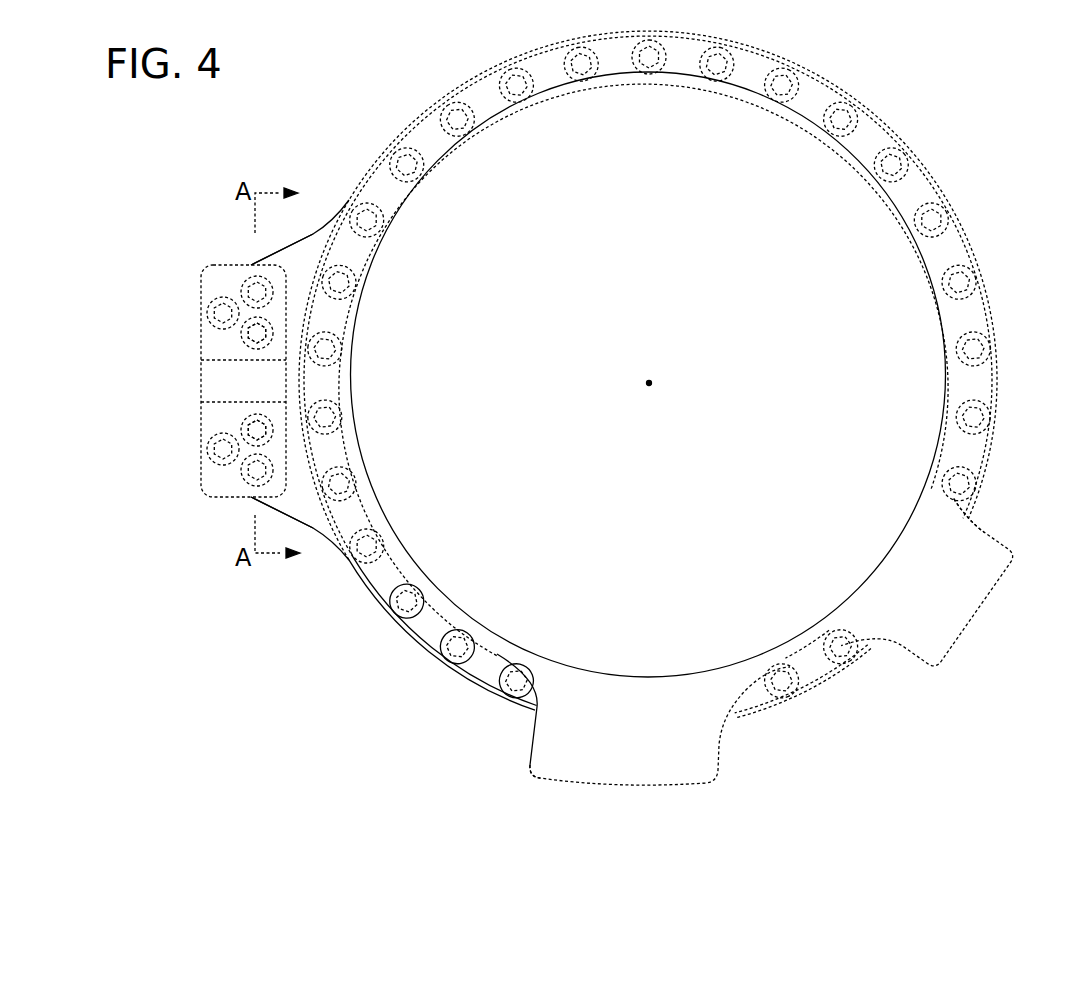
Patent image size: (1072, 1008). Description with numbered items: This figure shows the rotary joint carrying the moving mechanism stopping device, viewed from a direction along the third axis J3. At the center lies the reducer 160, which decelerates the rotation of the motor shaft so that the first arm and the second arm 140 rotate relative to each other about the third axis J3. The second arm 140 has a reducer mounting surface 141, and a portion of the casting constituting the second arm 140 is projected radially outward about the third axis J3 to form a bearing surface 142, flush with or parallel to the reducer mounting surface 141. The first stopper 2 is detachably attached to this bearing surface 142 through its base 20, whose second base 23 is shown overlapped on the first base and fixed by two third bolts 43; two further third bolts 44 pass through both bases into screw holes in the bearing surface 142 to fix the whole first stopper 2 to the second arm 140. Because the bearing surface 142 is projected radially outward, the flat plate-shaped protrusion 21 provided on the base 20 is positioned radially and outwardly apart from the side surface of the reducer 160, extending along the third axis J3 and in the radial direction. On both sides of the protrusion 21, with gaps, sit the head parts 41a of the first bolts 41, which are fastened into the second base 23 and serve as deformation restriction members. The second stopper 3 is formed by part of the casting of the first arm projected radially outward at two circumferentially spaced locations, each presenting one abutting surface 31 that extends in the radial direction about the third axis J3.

The first stopper 2 is at (149, 262).
The base 20 is at (188, 433).
The protrusion 21 is at (215, 377).
The second base 23 is at (277, 278).
The bearing surface 142 is at (287, 507).
The first bolts 41 is at (228, 340).
The head parts 41a is at (287, 334).
The third bolts 43 is at (193, 312).
The third bolts 44 is at (236, 272).
The second arm 140 is at (392, 638).
The reducer mounting surface 141 is at (360, 582).
The reducer 160 is at (470, 694).
The second stopper 3 is at (612, 801).
The abutting surfaces 31 is at (530, 740).
The third axis J3 is at (665, 384).